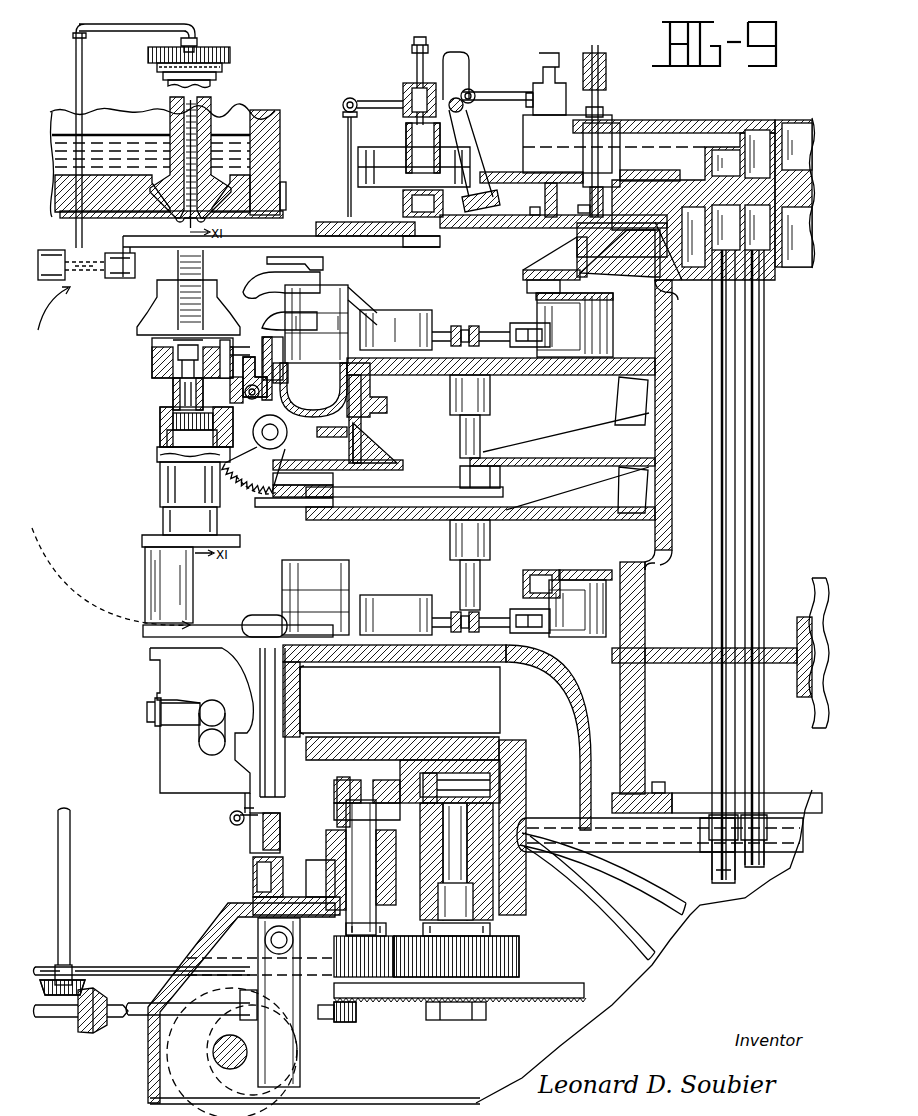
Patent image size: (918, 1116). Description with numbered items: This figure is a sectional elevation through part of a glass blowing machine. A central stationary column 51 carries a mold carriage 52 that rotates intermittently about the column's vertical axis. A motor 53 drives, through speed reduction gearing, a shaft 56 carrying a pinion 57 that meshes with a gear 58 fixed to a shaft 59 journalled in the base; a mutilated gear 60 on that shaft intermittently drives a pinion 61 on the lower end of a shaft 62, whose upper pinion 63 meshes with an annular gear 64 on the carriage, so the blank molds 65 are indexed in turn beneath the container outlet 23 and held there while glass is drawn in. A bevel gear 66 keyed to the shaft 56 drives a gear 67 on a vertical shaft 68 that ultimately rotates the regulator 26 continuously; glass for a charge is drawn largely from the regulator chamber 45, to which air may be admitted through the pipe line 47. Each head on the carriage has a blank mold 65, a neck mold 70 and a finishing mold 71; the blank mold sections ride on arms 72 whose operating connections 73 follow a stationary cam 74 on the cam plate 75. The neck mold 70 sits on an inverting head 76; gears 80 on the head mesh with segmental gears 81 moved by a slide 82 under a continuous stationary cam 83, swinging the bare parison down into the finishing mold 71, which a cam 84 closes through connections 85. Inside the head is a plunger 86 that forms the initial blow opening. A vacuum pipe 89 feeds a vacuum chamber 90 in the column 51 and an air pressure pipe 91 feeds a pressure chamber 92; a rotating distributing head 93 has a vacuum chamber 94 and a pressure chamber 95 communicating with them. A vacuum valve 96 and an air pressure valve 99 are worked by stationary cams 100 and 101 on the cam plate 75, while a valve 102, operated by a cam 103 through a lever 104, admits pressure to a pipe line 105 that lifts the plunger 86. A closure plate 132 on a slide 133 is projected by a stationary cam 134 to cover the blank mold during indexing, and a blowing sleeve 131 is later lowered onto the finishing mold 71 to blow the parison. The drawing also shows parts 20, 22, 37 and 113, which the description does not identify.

The tank 20 is at (281, 137).
The liquid in tank 22 is at (100, 143).
The container outlet 23 is at (180, 219).
The regulator 26 is at (214, 121).
The gear 37 is at (232, 57).
The regulator chamber 45 is at (188, 115).
The pipe line 47 is at (140, 33).
The central stationary column 51 is at (652, 548).
The mold carriage 52 is at (647, 706).
The motor 53 is at (238, 899).
The shaft 56 is at (50, 1019).
The pinion 57 is at (346, 1022).
The gear 58 is at (553, 1000).
The shaft 59 is at (492, 929).
The mutilated gear 60 is at (517, 959).
The pinion 61 is at (335, 945).
The shaft 62 is at (345, 828).
The pinion 63 is at (336, 792).
The annular gear 64 is at (401, 781).
The body blank mold 65 is at (172, 281).
The bevel gear 66 is at (93, 1034).
The gear 67 is at (84, 967).
The vertical shaft 68 is at (71, 877).
The neck mold 70 is at (172, 343).
The finishing mold 71 is at (152, 563).
The arms 72 is at (303, 320).
The operating connections 73 is at (504, 326).
The stationary cam 74 is at (525, 275).
The cam plate 75 is at (525, 228).
The inverting head 76 is at (165, 422).
The gears 80 is at (253, 484).
The segmental gears 81 is at (262, 500).
The slide 82 is at (416, 490).
The continuous stationary cam 83 is at (462, 460).
The cam 84 is at (540, 570).
The connections 85 is at (503, 612).
The plunger 86 is at (173, 392).
The vacuum pipe 89 is at (764, 512).
The vacuum chamber 90 is at (776, 262).
The air pressure pipe 91 is at (718, 421).
The air pressure chamber 92 is at (690, 270).
The distributing head 93 is at (778, 126).
The vacuum chamber 94 is at (757, 134).
The air pressure chamber 95 is at (723, 150).
The vacuum valve 96 is at (608, 112).
The air pressure valve 99 is at (540, 102).
The stationary cam 100 is at (604, 213).
The stationary cam 101 is at (545, 204).
The valve 102 is at (414, 126).
The stationary cam 103 is at (490, 185).
The lever 104 is at (460, 62).
The pipe line 105 is at (362, 102).
The cross bar 113 is at (675, 845).
The blowing sleeve 131 is at (163, 520).
The closure plate 132 is at (330, 226).
The slide 133 is at (410, 240).
The stationary cam 134 is at (406, 200).